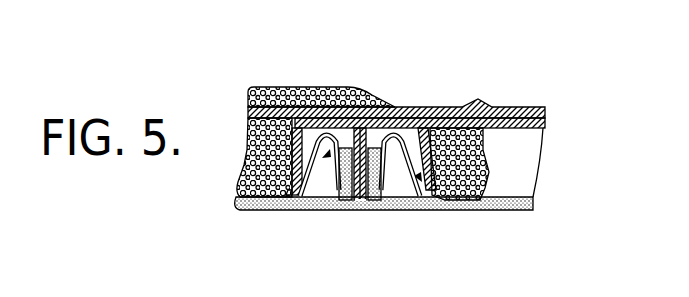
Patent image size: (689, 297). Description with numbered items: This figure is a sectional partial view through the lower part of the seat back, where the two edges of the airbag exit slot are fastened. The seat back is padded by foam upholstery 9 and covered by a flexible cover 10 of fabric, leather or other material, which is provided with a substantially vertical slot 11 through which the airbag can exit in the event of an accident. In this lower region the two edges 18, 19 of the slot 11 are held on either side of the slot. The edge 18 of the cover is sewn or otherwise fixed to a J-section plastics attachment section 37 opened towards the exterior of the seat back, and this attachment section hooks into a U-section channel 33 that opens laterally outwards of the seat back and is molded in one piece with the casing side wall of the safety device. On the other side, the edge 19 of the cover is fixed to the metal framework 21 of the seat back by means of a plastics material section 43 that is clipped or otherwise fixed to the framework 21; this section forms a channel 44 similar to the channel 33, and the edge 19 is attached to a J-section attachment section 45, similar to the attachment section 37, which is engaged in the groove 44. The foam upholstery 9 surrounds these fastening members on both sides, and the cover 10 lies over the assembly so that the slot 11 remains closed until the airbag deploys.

The foam upholstery 9 is at (328, 88).
The metal framework 21 is at (523, 110).
The U-section channel 33 is at (243, 135).
The plastics material section 43 is at (535, 125).
The cover 10 is at (262, 209).
The J-section attachment section 37 is at (313, 193).
The edge of the cover 18 is at (347, 208).
The slot 11 is at (362, 216).
The edge of the cover 19 is at (380, 208).
The J-section attachment section 45 is at (415, 190).
The channel 44 is at (448, 203).